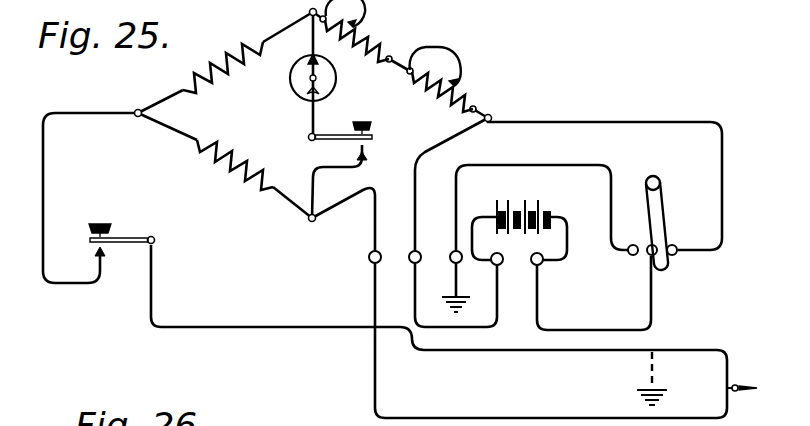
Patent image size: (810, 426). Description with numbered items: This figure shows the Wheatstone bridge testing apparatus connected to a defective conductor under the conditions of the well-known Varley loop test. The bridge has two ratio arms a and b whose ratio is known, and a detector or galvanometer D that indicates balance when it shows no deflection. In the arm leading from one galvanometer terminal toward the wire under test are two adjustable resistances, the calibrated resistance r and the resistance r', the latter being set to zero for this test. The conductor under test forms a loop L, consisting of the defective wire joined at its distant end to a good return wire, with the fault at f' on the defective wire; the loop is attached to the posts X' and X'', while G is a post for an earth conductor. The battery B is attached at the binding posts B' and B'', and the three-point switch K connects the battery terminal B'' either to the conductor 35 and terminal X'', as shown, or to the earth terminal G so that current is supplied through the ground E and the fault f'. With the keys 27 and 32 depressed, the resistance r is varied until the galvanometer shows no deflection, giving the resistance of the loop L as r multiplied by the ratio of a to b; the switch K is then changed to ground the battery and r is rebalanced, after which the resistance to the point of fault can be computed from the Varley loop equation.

The bridge arm b is at (230, 52).
The bridge arm a is at (236, 180).
The detector or galvanometer D is at (290, 87).
The calibrated resistance r is at (357, 35).
The resistance r' is at (441, 79).
The key 32 is at (370, 152).
The key 27 is at (95, 260).
The post X' is at (364, 247).
The post X'' is at (404, 245).
The earth conductor post G is at (453, 253).
The ground E is at (454, 298).
The battery B is at (519, 217).
The binding post B' is at (507, 271).
The binding post B'' is at (550, 271).
The three-point switch K is at (657, 207).
The conductor 35 is at (722, 172).
The loop L is at (471, 352).
The fault f' is at (633, 378).